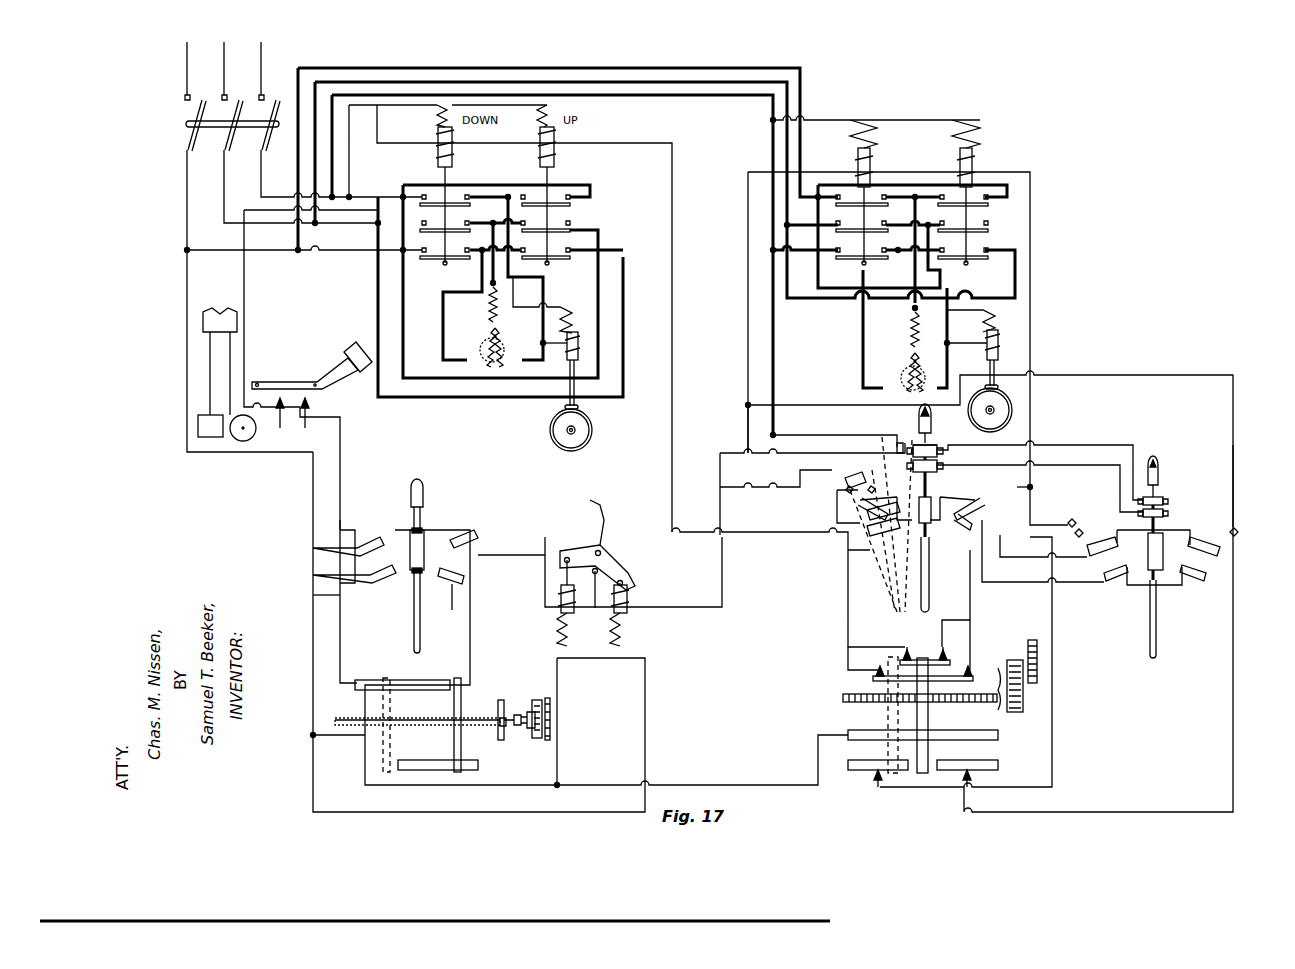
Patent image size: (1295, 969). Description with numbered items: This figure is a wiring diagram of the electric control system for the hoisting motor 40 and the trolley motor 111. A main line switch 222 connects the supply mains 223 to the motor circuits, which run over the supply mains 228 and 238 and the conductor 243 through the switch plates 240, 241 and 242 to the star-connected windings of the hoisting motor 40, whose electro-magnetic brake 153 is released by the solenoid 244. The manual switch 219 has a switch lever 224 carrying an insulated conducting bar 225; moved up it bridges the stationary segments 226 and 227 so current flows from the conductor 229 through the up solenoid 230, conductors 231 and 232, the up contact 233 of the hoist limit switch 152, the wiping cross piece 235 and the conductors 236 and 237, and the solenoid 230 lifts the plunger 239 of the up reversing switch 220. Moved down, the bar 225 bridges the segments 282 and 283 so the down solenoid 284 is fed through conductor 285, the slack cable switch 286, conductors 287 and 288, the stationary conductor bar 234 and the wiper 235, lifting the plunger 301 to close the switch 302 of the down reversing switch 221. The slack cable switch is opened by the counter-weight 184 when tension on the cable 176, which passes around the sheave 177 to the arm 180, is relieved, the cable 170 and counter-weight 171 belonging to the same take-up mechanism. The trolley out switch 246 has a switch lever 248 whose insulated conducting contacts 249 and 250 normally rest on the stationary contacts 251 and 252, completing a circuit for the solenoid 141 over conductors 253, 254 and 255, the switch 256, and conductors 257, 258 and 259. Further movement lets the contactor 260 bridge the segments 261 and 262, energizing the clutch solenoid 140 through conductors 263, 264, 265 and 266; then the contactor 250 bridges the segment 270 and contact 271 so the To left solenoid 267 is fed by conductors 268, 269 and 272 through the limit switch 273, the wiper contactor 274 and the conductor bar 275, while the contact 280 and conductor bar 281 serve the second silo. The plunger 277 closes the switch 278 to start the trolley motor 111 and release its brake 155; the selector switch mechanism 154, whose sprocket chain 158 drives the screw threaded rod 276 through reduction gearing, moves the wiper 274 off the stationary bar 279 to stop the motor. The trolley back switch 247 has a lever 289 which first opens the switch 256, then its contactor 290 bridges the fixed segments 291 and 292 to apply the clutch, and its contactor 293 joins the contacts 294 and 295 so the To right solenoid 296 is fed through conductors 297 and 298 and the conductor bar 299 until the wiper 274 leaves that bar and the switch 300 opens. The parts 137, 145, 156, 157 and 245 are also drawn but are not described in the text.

The hoisting motor 40 is at (494, 286).
The trolley motor 111 is at (897, 372).
The link 137 is at (595, 598).
The solenoid 140 is at (577, 660).
The solenoid 141 is at (632, 636).
The lever 145 is at (604, 555).
The hoist limit switch 152 is at (338, 703).
The electro-magnetic brake 153 is at (596, 366).
The selector switch mechanism 154 is at (1024, 726).
The brake 155 is at (1013, 360).
The gear 156 is at (552, 728).
The pinion 157 is at (535, 740).
The sprocket chain 158 is at (1038, 651).
The cable 170 is at (210, 375).
The counter-weight 171 is at (208, 428).
The cable 176 is at (230, 348).
The sheave 177 is at (242, 430).
The slack cable switch arm 180 is at (267, 384).
The counter-weight 184 is at (360, 352).
The manual switch 219 is at (448, 520).
The up reversing switch 220 is at (455, 173).
The down reversing switch 221 is at (559, 177).
The main line switch 222 is at (180, 125).
The supply mains 223 is at (178, 72).
The switch lever 224 is at (413, 500).
The insulated conducting bar 225 is at (415, 555).
The stationary segment 226 is at (468, 536).
The stationary segment 227 is at (453, 592).
The supply main 228 is at (262, 182).
The conductor 229 is at (413, 194).
The up solenoid 230 is at (555, 108).
The conductor 231 is at (673, 243).
The conductor 232 is at (560, 622).
The up contact 233 is at (412, 770).
The stationary conductor bar 234 is at (418, 688).
The wiping cross piece 235 is at (458, 675).
The conductor 236 is at (330, 735).
The conductor 237 is at (313, 508).
The supply main 238 is at (187, 207).
The plunger 239 is at (552, 152).
The switch plate 240 is at (572, 208).
The switch plate 241 is at (600, 230).
The switch plate 242 is at (572, 258).
The conductor 243 is at (226, 187).
The brake solenoid 244 is at (568, 305).
The collar 245 is at (472, 720).
The trolley out switch 246 is at (940, 480).
The trolley back switch 247 is at (1171, 597).
The switch lever 248 is at (932, 430).
The insulated conducting contact 249 is at (938, 452).
The insulated conducting contact 250 is at (938, 466).
The stationary contact 251 is at (902, 444).
The stationary contact 252 is at (905, 515).
The conductor 253 is at (750, 340).
The conductor 254 is at (778, 432).
The conductor 255 is at (1090, 445).
The switch 256 is at (1166, 504).
The conductor 257 is at (1044, 457).
The conductor 258 is at (722, 597).
The conductor 259 is at (646, 737).
The contactor 260 is at (930, 515).
The segment 261 is at (868, 516).
The segment 262 is at (868, 532).
The conductor 263 is at (783, 537).
The conductor 264 is at (750, 535).
The conductor 265 is at (558, 766).
The conductor 266 is at (537, 790).
The To left solenoid 267 is at (880, 138).
The conductor 268 is at (812, 118).
The conductor 269 is at (748, 340).
The segment 270 is at (845, 480).
The stationary contact 271 is at (873, 477).
The conductor 272 is at (848, 627).
The limit switch 273 is at (888, 660).
The wiper contactor 274 is at (930, 718).
The conductor bar 275 is at (1025, 703).
The screw threaded rod 276 is at (970, 693).
The plunger 277 is at (872, 176).
The switch 278 is at (826, 210).
The stationary bar 279 is at (912, 658).
The contact 280 is at (837, 500).
The conductor bar 281 is at (872, 678).
The segment 282 is at (313, 548).
The segment 283 is at (313, 575).
The Down solenoid 284 is at (437, 118).
The conductor 285 is at (244, 291).
The slack cable switch 286 is at (292, 398).
The conductor 287 is at (342, 432).
The conductor 288 is at (340, 622).
The switch lever 289 is at (1157, 468).
The contactor 290 is at (1160, 553).
The fixed segment 291 is at (1092, 553).
The fixed segment 292 is at (1110, 580).
The contactor 293 is at (1140, 500).
The contact 294 is at (1068, 522).
The contact 295 is at (1082, 531).
The To right solenoid 296 is at (985, 138).
The conductor 297 is at (1032, 232).
The conductor 298 is at (1054, 768).
The conductor bar 299 is at (858, 772).
The switch 300 is at (990, 213).
The plunger 301 is at (436, 152).
The switch 302 is at (417, 210).